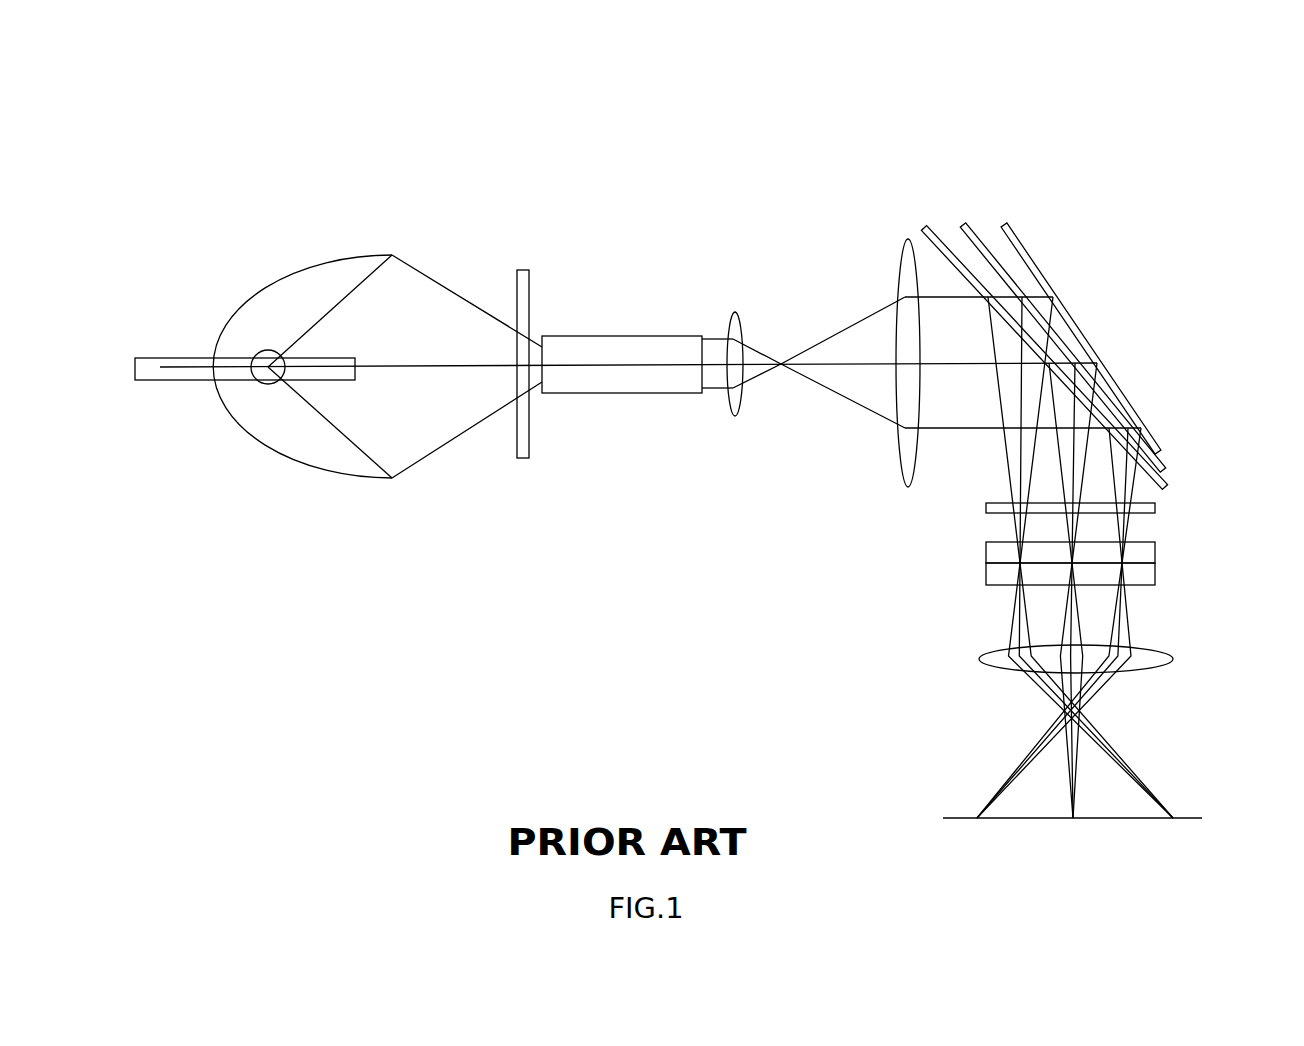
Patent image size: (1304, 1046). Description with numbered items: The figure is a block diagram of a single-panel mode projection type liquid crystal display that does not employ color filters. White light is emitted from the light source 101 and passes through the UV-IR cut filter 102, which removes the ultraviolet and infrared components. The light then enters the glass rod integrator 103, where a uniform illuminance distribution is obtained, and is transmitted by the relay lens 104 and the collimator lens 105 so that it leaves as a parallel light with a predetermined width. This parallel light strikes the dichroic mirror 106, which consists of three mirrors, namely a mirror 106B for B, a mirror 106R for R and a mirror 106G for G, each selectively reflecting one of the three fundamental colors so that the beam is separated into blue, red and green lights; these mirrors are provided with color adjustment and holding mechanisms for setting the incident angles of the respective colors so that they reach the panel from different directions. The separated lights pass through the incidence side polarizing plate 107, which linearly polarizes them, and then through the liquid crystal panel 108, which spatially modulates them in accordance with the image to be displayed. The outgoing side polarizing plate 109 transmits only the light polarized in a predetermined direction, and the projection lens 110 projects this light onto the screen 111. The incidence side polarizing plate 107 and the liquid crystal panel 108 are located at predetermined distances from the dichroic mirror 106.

The light source 101 is at (320, 270).
The UV-IR cut filter 102 is at (527, 268).
The glass rod integrator 103 is at (622, 335).
The relay lens 104 is at (733, 312).
The collimator lens 105 is at (905, 238).
The dichroic mirror 106 is at (1099, 280).
The mirror for B 106B is at (970, 273).
The mirror for R 106R is at (1048, 320).
The mirror for G 106G is at (1102, 357).
The incidence side polarizing plate 107 is at (986, 505).
The liquid crystal panel 108 is at (988, 550).
The outgoing side polarizing plate 109 is at (988, 581).
The projection lens 110 is at (980, 660).
The screen 111 is at (962, 818).